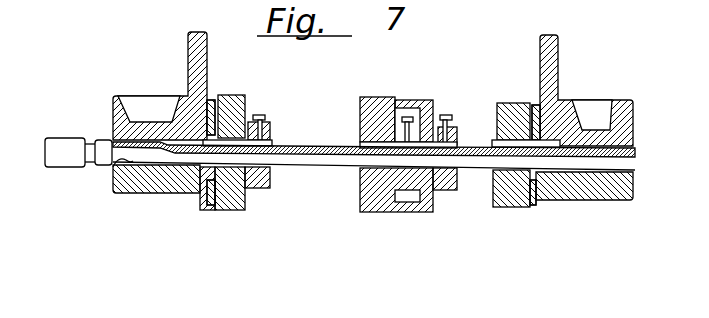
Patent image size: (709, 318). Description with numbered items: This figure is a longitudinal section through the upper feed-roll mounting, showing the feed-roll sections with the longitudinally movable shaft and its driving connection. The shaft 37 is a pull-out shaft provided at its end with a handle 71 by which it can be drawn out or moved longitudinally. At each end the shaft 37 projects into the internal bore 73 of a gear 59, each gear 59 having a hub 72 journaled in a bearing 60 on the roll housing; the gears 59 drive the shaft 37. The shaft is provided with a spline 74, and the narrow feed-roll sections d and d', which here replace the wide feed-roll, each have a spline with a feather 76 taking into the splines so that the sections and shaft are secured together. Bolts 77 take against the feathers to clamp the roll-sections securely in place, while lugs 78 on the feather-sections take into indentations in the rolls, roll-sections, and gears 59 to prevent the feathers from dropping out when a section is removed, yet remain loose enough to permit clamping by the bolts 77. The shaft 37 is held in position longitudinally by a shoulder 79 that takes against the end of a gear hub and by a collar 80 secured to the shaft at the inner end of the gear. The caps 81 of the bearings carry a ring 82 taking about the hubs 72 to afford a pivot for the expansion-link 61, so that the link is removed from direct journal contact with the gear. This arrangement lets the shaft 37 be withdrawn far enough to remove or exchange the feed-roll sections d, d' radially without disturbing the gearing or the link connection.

The handle 71 is at (57, 148).
The shoulder 79 is at (112, 142).
The bearings 60 is at (113, 108).
The expansion-links 61 is at (214, 196).
The gears 59 is at (246, 100).
The ring 82 is at (211, 130).
The collar 80 is at (267, 121).
The feed-roll section d is at (377, 105).
The feed-roll section d' is at (418, 102).
The bolts 77 is at (446, 121).
The lugs 78 is at (178, 124).
The spline 74 is at (289, 146).
The shaft 37 is at (310, 165).
The internal bore 73 is at (114, 166).
The caps 81 is at (133, 194).
The hubs 72 is at (172, 194).
The feather 76 is at (205, 178).